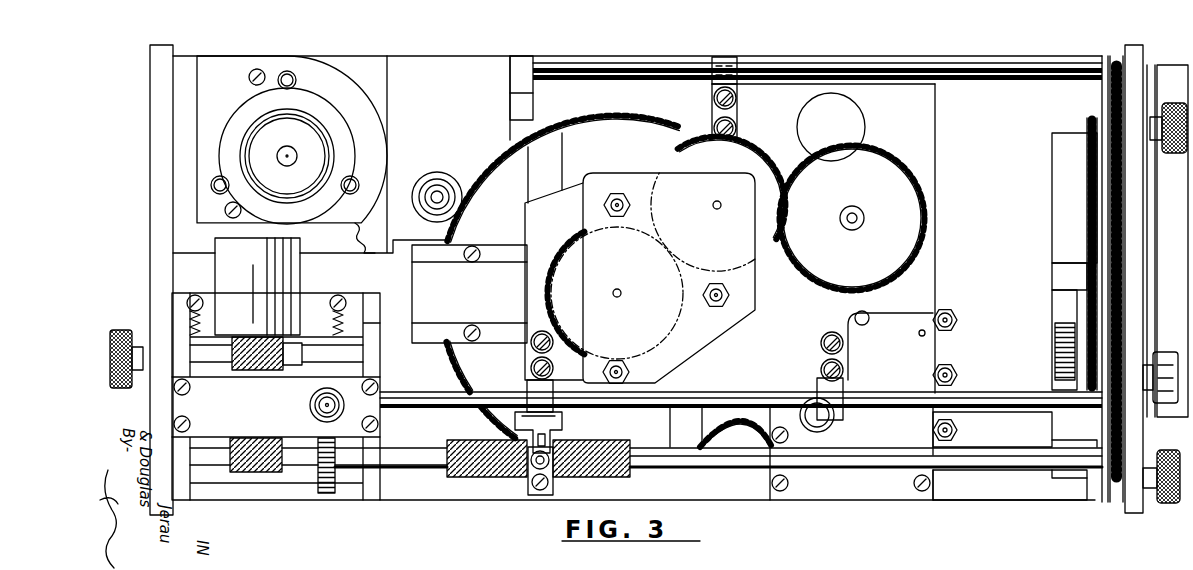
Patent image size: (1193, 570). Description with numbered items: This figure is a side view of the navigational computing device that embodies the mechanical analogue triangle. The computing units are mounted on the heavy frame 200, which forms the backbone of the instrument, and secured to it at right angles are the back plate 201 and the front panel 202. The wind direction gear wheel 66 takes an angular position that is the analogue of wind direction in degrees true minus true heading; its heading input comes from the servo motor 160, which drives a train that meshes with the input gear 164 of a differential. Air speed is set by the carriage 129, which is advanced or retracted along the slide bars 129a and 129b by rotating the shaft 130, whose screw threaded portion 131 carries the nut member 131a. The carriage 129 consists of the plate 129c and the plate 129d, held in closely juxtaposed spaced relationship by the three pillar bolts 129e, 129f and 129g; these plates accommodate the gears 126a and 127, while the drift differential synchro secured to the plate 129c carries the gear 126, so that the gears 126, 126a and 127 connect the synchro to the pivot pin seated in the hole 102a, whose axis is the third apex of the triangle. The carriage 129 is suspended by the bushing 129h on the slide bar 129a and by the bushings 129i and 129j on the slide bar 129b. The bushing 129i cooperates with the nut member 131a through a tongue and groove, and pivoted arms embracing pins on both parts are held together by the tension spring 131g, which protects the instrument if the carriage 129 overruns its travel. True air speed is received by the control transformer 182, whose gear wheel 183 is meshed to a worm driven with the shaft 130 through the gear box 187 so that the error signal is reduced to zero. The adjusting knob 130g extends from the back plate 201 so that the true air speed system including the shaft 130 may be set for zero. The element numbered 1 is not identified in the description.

The worm 1 is at (250, 372).
The gear wheel 66 is at (622, 126).
The hole 102a is at (618, 290).
The gear 126 is at (866, 160).
The gear 126a is at (740, 156).
The gear 127 is at (568, 257).
The carriage 129 is at (937, 284).
The slide bar 129a is at (885, 70).
The slide bar 129b is at (992, 396).
The plate 129c is at (532, 293).
The plate 129d is at (695, 352).
The pillar bolt 129e is at (628, 347).
The pillar bolt 129f is at (708, 292).
The pillar bolt 129g is at (617, 194).
The bushing 129h is at (738, 41).
The bushing 129i is at (526, 389).
The bushing 129j is at (843, 392).
The shaft 130 is at (433, 472).
The adjusting knob 130g is at (122, 390).
The screw threaded portion 131 is at (517, 478).
The nut member 131a is at (553, 472).
The tension spring 131g is at (514, 413).
The servo motor 160 is at (317, 102).
The input gear 164 is at (358, 236).
The control transformer 182 is at (300, 281).
The gear wheel 183 is at (327, 494).
The gear box 187 is at (383, 487).
The heavy frame 200 is at (793, 64).
The back plate 201 is at (175, 514).
The front panel 202 is at (1129, 512).